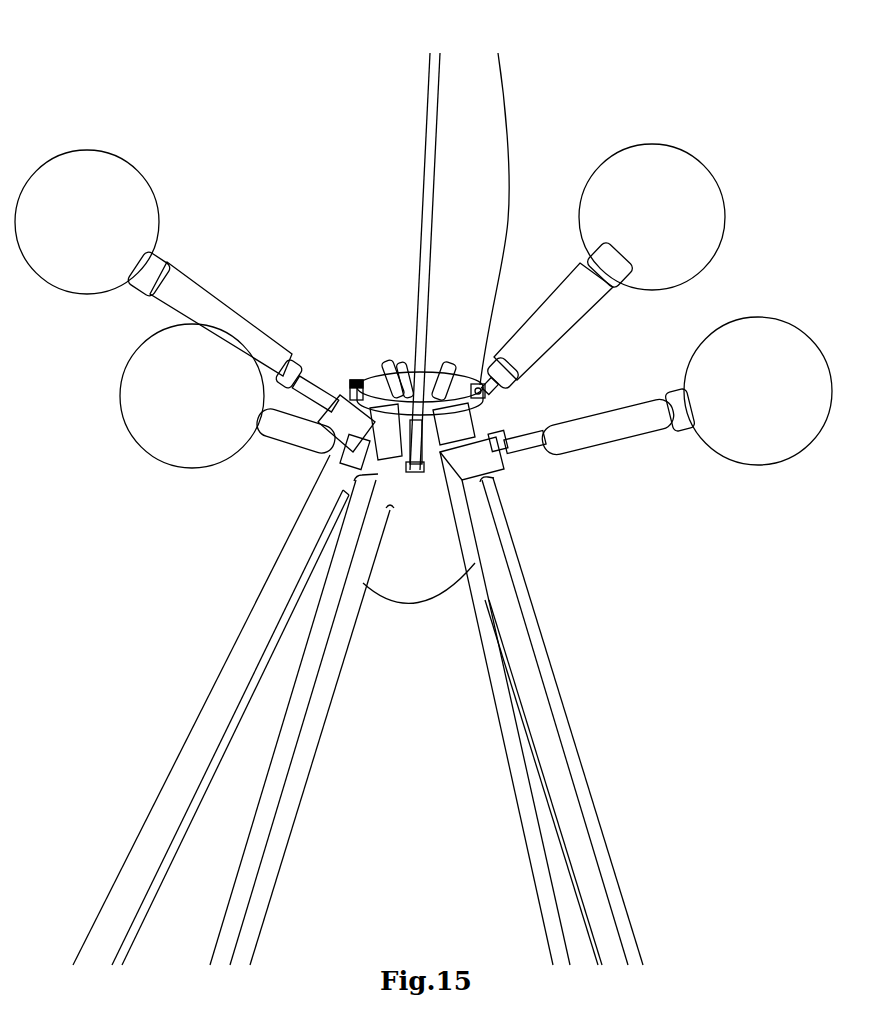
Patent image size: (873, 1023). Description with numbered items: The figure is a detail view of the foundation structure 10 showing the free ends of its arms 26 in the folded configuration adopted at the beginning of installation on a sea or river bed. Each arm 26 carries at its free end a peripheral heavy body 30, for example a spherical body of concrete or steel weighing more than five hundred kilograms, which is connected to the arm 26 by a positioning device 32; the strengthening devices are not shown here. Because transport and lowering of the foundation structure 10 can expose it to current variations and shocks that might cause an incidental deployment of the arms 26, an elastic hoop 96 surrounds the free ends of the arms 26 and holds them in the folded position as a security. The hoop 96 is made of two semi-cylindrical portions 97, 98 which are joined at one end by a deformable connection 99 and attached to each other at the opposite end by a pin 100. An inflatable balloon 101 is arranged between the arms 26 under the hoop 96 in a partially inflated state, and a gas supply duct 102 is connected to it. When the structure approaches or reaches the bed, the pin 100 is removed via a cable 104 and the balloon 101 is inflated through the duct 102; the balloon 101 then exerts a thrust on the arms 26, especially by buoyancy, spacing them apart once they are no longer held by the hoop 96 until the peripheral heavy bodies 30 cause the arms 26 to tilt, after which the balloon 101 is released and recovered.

The foundation structure 10 is at (622, 64).
The arm 26 is at (182, 766).
The peripheral heavy body 30 is at (100, 160).
The positioning device 32 is at (215, 305).
The elastic hoop 96 is at (370, 382).
The semi-cylindrical portion 97 is at (398, 365).
The semi-cylindrical portion 98 is at (454, 370).
The deformable connection 99 is at (348, 386).
The pin 100 is at (488, 392).
The inflatable balloon 101 is at (412, 600).
The gas supply duct 102 is at (424, 194).
The cable 104 is at (508, 142).